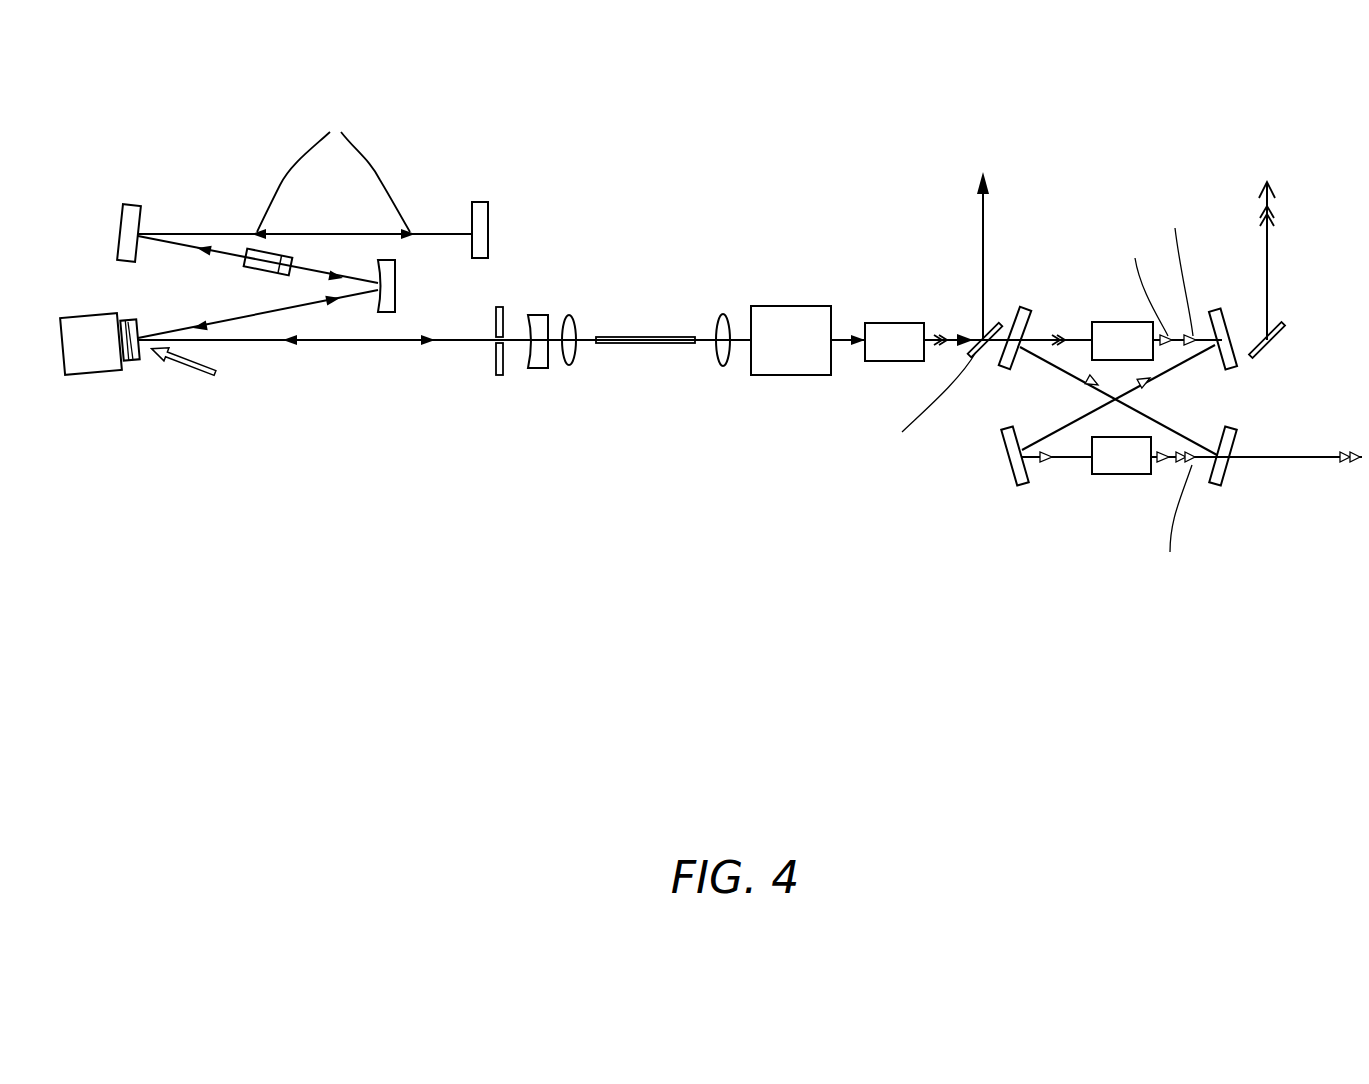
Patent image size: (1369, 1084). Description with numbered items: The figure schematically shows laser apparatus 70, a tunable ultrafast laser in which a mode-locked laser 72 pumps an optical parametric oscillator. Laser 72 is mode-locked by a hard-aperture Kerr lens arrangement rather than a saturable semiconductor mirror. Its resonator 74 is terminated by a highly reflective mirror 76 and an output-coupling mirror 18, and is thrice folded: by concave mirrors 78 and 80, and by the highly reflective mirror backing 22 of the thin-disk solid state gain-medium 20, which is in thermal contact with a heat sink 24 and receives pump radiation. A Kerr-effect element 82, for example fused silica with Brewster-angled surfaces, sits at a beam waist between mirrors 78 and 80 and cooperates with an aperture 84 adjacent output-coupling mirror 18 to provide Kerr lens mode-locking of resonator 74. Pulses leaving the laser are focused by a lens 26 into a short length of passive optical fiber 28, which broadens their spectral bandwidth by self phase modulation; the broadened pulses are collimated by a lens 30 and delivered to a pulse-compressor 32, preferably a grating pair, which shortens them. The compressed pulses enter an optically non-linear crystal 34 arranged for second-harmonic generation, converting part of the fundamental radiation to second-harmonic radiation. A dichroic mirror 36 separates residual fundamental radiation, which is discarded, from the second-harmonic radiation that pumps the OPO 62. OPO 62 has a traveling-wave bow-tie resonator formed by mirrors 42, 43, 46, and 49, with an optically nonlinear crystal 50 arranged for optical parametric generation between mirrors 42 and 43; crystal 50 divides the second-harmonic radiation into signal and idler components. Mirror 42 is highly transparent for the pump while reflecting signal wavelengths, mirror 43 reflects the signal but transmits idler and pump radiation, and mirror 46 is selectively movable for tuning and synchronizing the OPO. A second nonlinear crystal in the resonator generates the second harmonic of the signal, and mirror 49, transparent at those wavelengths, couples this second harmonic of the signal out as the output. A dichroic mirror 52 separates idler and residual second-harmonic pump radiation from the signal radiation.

The output-coupling mirror 18 is at (532, 320).
The thin-disk solid state gain-medium 20 is at (128, 320).
The highly reflective mirror backing 22 is at (128, 358).
The heat sink 24 is at (89, 374).
The lens 26 is at (566, 362).
The optical fiber 28 is at (636, 345).
The lens 30 is at (723, 316).
The pulse-compressor 32 is at (780, 376).
The optically non-linear crystal 34 is at (893, 323).
The dichroic mirror 36 is at (984, 356).
The mirror 42 is at (1027, 322).
The mirror 43 is at (1213, 368).
The mirror 46 is at (1012, 480).
The mirror 49 is at (1235, 440).
The optically nonlinear crystal 50 is at (1120, 322).
The dichroic mirror 52 is at (1283, 333).
The OPO 62 is at (1163, 504).
The laser apparatus 70 is at (462, 720).
The mode-locked laser 72 is at (308, 530).
The resonator 74 is at (210, 229).
The highly reflective mirror 76 is at (488, 216).
The concave mirror 78 is at (396, 304).
The concave mirror 80 is at (140, 217).
The Kerr-effect element 82 is at (252, 272).
The aperture 84 is at (494, 343).